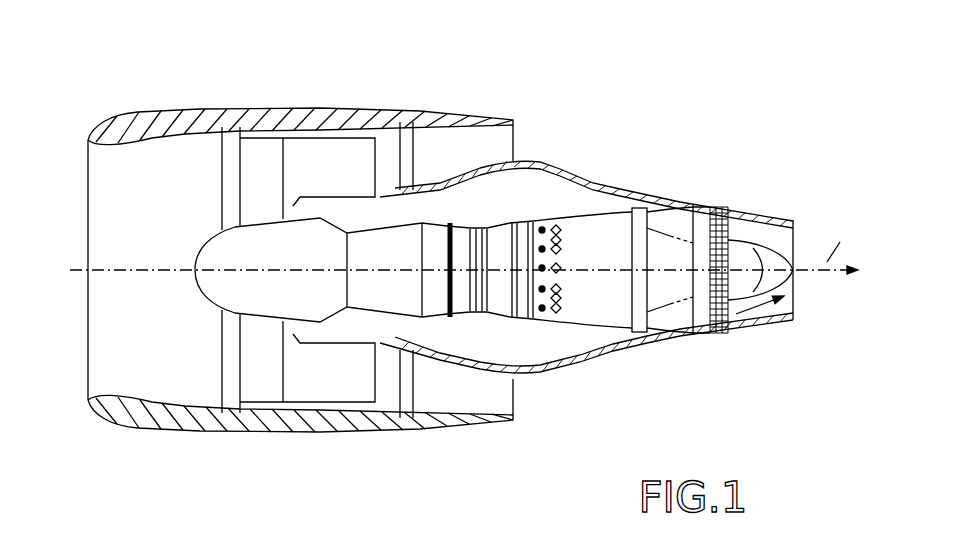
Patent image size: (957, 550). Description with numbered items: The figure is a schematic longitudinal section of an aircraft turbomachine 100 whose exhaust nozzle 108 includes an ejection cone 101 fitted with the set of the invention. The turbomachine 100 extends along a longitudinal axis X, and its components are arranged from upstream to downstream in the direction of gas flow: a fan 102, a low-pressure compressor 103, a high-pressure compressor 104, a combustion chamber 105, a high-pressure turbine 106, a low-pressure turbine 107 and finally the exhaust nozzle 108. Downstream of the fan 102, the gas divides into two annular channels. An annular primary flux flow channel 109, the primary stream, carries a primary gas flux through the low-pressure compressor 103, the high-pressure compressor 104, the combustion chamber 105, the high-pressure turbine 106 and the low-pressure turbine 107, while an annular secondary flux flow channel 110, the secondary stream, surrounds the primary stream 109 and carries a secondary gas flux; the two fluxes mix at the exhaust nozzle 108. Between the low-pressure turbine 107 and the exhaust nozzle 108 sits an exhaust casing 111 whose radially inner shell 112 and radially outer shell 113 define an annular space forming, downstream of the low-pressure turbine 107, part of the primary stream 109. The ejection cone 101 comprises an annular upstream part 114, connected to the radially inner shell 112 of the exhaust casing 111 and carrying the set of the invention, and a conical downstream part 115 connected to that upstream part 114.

The turbomachine 100 is at (566, 62).
The ejection cone 101 is at (802, 327).
The fan 102 is at (262, 170).
The low-pressure compressor 103 is at (383, 287).
The high-pressure compressor 104 is at (465, 303).
The combustion chamber 105 is at (475, 302).
The high-pressure turbine 106 is at (502, 232).
The low-pressure turbine 107 is at (593, 222).
The exhaust nozzle 108 is at (792, 152).
The annular primary flux flow channel 109 is at (676, 325).
The annular secondary flux flow channel 110 is at (450, 148).
The exhaust casing 111 is at (687, 209).
The radially inner shell 112 is at (675, 232).
The radially outer shell 113 is at (655, 215).
The annular upstream part 114 is at (740, 280).
The conical downstream part 115 is at (777, 275).